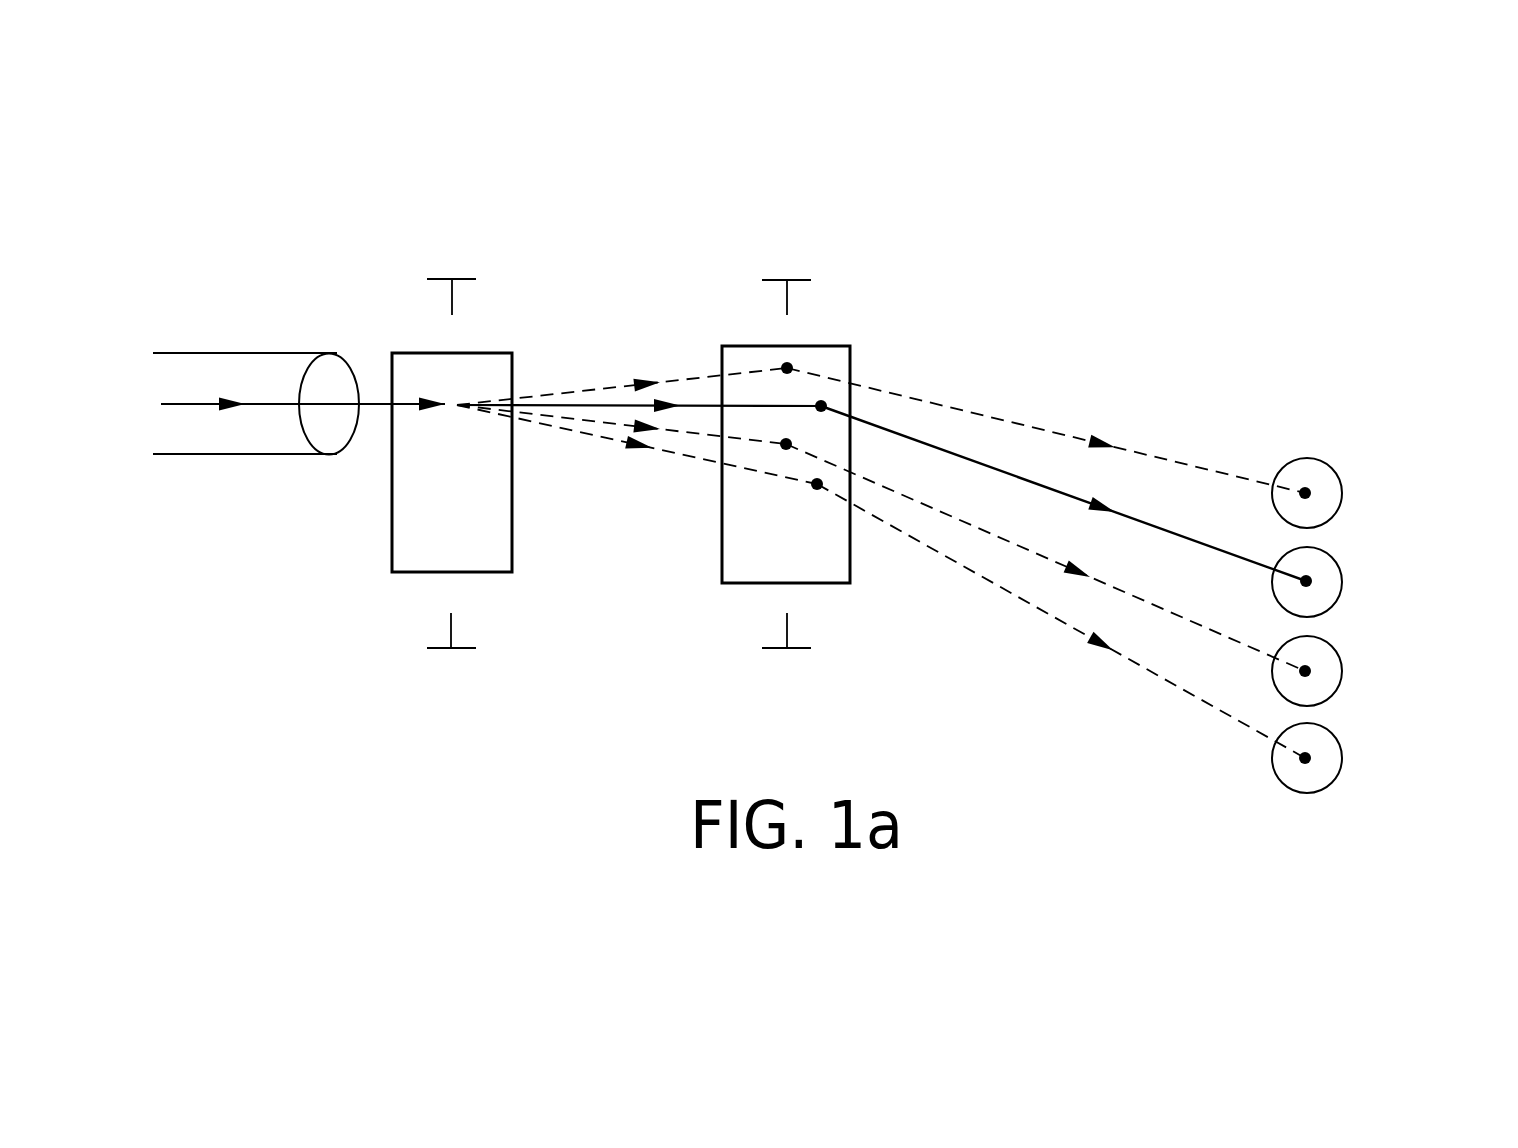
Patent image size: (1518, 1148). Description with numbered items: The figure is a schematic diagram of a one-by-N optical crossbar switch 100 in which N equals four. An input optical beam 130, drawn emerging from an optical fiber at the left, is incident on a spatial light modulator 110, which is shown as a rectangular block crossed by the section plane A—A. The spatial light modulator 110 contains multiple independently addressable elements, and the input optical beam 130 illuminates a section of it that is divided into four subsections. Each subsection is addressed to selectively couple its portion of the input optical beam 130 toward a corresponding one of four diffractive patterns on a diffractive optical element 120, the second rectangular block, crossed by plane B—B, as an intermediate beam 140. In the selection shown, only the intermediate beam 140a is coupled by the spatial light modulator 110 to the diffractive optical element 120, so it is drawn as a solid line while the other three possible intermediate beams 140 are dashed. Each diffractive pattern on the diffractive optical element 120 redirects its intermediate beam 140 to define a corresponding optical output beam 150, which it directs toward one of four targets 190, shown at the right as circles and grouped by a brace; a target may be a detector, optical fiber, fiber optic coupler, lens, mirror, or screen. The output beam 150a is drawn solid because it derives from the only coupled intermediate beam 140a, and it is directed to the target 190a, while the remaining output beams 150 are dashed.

The optical crossbar switch 100 is at (921, 252).
The spatial light modulator 110 is at (391, 518).
The diffractive optical element 120 is at (720, 530).
The input optical beam 130 is at (215, 437).
The intermediate beam 140 is at (578, 452).
The intermediate beam 140a is at (592, 403).
The optical output beam 150 is at (1000, 602).
The output beam 150a is at (1150, 525).
The target 190 is at (1400, 443).
The target 190a is at (1345, 582).